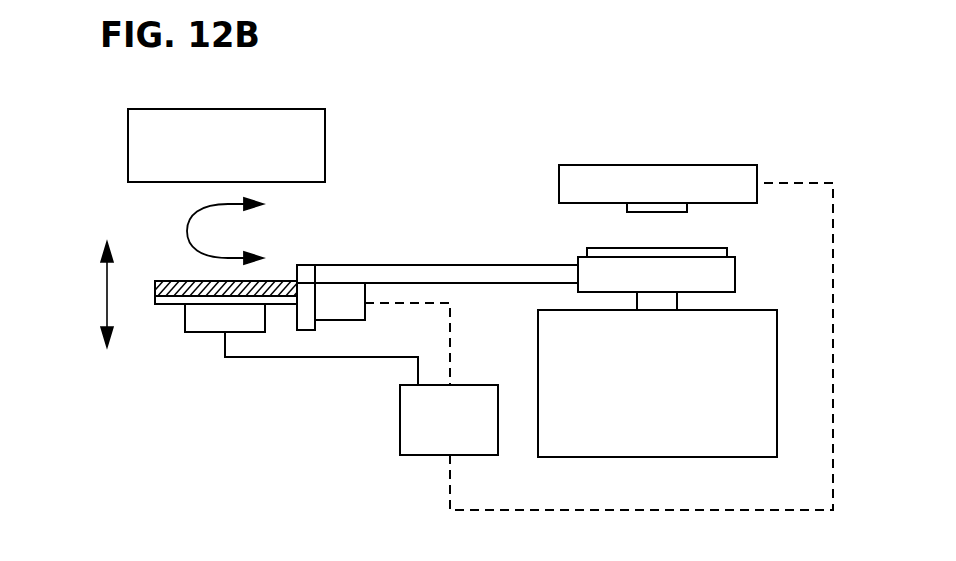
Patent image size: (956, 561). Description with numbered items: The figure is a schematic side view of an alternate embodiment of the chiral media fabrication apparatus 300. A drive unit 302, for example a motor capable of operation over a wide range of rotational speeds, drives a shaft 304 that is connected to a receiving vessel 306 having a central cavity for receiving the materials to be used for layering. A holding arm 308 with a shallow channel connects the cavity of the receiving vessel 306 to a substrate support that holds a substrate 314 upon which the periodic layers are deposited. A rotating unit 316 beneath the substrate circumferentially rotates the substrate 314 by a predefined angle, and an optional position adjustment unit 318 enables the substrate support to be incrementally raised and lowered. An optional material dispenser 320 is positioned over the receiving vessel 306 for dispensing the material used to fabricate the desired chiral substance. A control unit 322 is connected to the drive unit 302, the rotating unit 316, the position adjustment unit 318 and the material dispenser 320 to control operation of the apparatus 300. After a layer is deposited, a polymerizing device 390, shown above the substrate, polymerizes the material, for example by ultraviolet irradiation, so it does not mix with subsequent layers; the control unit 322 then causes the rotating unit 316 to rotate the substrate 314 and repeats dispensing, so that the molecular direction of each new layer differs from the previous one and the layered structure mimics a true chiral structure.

The apparatus 300 is at (535, 137).
The drive unit 302 is at (657, 457).
The shaft 304 is at (690, 302).
The receiving vessel 306 is at (737, 272).
The holding arm 308 is at (382, 267).
The substrate 314 is at (187, 281).
The rotating unit 316 is at (205, 333).
The position adjustment unit 318 is at (345, 320).
The material dispenser 320 is at (658, 165).
The control unit 322 is at (398, 415).
The polymerizing device 390 is at (325, 147).